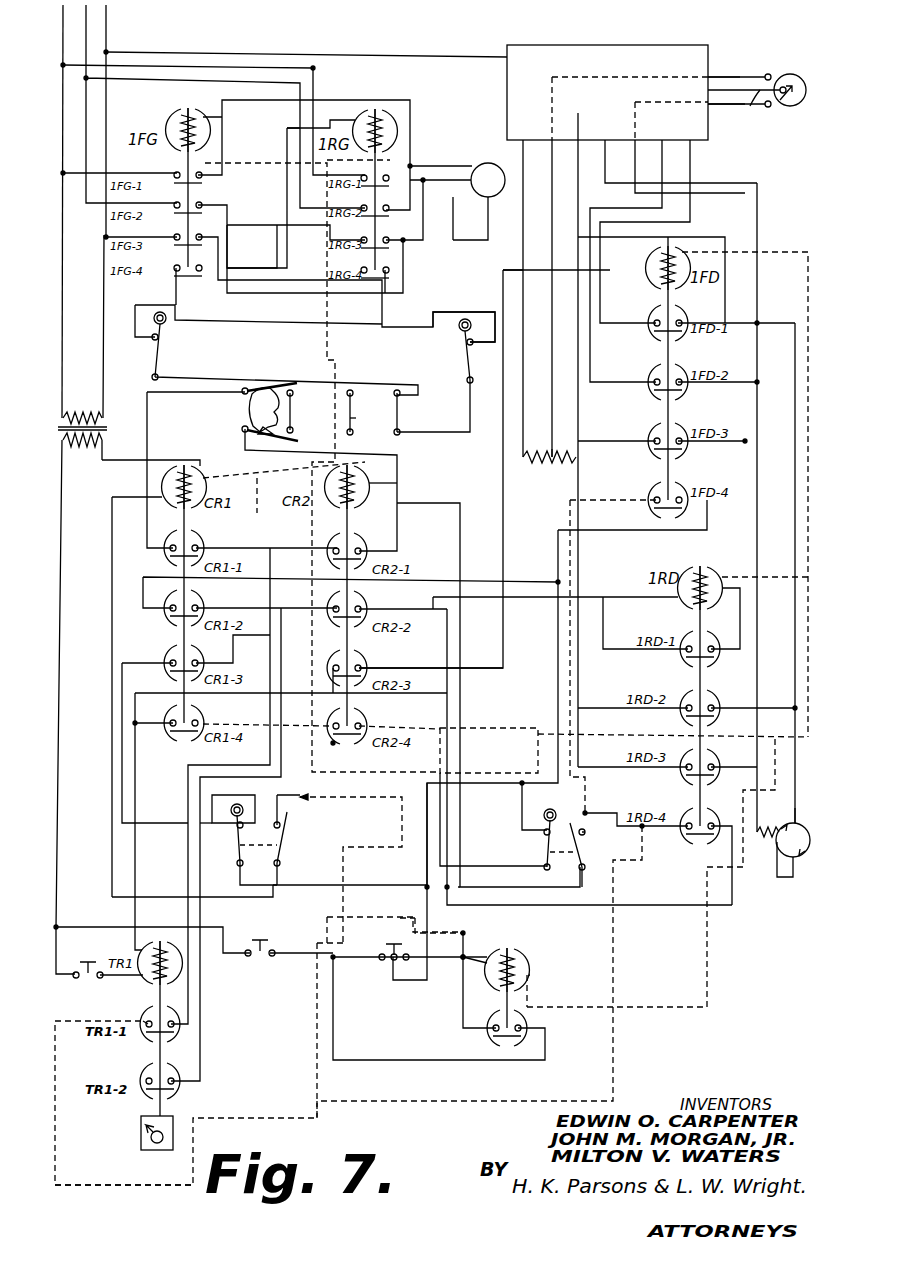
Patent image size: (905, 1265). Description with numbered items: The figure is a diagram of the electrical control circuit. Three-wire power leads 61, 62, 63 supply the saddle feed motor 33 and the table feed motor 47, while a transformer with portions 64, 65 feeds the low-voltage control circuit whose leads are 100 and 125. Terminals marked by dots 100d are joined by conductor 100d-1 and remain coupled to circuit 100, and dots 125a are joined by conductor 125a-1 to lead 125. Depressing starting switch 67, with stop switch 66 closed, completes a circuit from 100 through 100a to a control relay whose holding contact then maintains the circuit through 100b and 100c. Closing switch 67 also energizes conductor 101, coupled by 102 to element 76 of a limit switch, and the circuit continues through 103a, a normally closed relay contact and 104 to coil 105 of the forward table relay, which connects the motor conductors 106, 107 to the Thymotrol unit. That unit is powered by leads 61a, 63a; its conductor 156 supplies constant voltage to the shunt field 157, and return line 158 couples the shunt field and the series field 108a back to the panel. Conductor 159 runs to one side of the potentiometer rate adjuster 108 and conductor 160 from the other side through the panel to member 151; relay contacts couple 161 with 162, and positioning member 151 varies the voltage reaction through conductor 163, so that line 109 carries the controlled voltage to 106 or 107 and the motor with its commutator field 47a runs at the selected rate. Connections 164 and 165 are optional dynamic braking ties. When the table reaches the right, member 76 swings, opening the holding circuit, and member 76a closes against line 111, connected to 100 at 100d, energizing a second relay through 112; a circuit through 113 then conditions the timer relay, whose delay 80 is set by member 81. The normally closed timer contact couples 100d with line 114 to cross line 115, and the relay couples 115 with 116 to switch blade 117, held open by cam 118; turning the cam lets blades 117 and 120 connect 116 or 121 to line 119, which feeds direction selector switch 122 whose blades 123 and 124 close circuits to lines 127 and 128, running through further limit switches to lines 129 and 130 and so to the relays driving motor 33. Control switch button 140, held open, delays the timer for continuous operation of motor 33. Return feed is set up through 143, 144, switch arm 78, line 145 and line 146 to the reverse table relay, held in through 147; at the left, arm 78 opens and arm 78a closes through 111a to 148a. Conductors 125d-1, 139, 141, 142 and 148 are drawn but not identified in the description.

The power lead 61 is at (63, 22).
The power lead 62 is at (86, 16).
The power lead 63 is at (106, 43).
The Thymotrol power lead 61a is at (367, 68).
The Thymotrol power lead 63a is at (420, 57).
The transformer portion 64 is at (62, 416).
The transformer portion 65 is at (62, 442).
The control circuit lead 100 is at (61, 480).
The conductor 100a is at (480, 957).
The holding circuit conductor 100b is at (470, 1060).
The conductor 100c is at (462, 990).
The control circuit terminal 100d is at (650, 497).
The conductor 100d-1 is at (216, 1120).
The conductor 101 is at (427, 896).
The conductor 102 is at (557, 716).
The conductor 103a is at (440, 755).
The conductor 104 is at (504, 396).
The relay coil 105 is at (690, 262).
The motor conductor 106 is at (577, 222).
The motor conductor 107 is at (603, 176).
The potentiometer rate adjuster 108 is at (662, 85).
The series field 108a is at (549, 474).
The controlled voltage output line 109 is at (630, 208).
The line 111 is at (605, 814).
The line 111a is at (320, 800).
The conductor 112 is at (462, 700).
The conductor 113 is at (300, 692).
The line 114 is at (186, 818).
The cross line 115 is at (270, 548).
The line 116 is at (398, 548).
The switch blade 117 is at (243, 426).
The cam 118 is at (250, 402).
The line 119 is at (309, 411).
The switch blade 120 is at (281, 386).
The line 121 is at (146, 405).
The direction selector switch 122 is at (356, 418).
The switch blade 123 is at (366, 390).
The switch blade 124 is at (380, 442).
The control circuit lead 125 is at (112, 472).
The control circuit terminal 125a is at (208, 139).
The conductor 125a-1 is at (249, 165).
The line 125d-1 is at (402, 847).
The line 127 is at (220, 378).
The line 128 is at (471, 435).
The line 129 is at (145, 305).
The line 130 is at (438, 312).
The line 139 is at (245, 266).
The control switch button 140 is at (80, 978).
The line 141 is at (202, 1005).
The line 142 is at (236, 608).
The conductor 143 is at (450, 655).
The conductor 144 is at (320, 886).
The line 145 is at (122, 697).
The line 146 is at (233, 660).
The conductor 147 is at (735, 908).
The line 148 is at (517, 582).
The line 148a is at (152, 927).
The adjustable member 151 is at (770, 50).
The conductor 156 is at (522, 165).
The shunt field 157 is at (527, 466).
The return line 158 is at (552, 157).
The conductor 159 is at (748, 76).
The conductor 160 is at (733, 106).
The conductor 161 is at (637, 160).
The conductor 162 is at (690, 153).
The conductor 163 is at (751, 104).
The dynamic braking connection 164 is at (578, 147).
The dynamic braking connection 165 is at (605, 140).
The motor 33 is at (488, 197).
The table feed motor 47 is at (798, 880).
The commutator field 47a is at (760, 857).
The stop switch 66 is at (260, 940).
The starting switch button 67 is at (385, 950).
The limit switch element 76 is at (554, 812).
The limit switch member 76a is at (578, 850).
The switch arm 78 is at (236, 816).
The switch arm 78a is at (280, 843).
The adjustable timer delay 80 is at (154, 1135).
The settable member 81 is at (150, 1136).